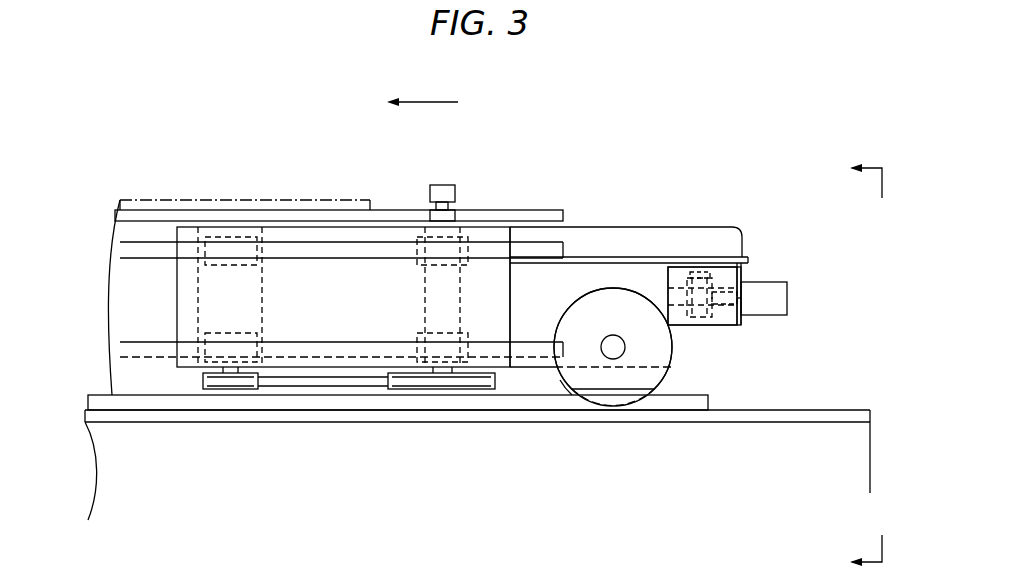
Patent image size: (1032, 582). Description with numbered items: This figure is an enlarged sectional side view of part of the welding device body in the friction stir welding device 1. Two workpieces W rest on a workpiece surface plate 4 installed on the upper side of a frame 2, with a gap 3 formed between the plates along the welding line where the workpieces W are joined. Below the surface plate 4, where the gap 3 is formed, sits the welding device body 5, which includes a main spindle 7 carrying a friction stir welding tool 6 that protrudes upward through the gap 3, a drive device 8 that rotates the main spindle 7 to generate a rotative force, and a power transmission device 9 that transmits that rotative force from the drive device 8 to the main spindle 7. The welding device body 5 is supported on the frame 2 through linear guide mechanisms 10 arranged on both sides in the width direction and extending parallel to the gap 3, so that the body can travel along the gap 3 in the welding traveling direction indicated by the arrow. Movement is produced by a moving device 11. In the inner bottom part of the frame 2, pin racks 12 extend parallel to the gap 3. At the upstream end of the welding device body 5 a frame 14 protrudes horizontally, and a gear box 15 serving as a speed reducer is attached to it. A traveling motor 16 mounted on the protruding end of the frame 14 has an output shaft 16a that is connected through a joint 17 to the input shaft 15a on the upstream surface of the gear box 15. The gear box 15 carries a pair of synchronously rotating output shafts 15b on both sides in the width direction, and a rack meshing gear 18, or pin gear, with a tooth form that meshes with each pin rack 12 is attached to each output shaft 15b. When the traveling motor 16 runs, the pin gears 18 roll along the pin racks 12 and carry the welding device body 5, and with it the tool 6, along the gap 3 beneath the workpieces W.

The friction stir welding device 1 is at (516, 138).
The frame 2 is at (826, 410).
The gap 3 is at (393, 212).
The workpiece surface plate 4 is at (538, 210).
The welding device body 5 is at (717, 190).
The friction stir welding tool 6 is at (444, 185).
The main spindle 7 is at (425, 302).
The drive device 8 is at (198, 305).
The power transmission device 9 is at (333, 388).
The linear guide mechanism 10 is at (322, 243).
The moving device 11 is at (741, 346).
The pin rack 12 is at (690, 398).
The frame 14 is at (625, 238).
The gear box 15 is at (533, 322).
The input shaft 15a is at (680, 290).
The output shaft 15b is at (613, 352).
The traveling motor 16 is at (775, 298).
The output shaft 16a is at (722, 290).
The joint 17 is at (702, 280).
The rack meshing gear 18 is at (562, 388).
The workpiece W is at (175, 200).